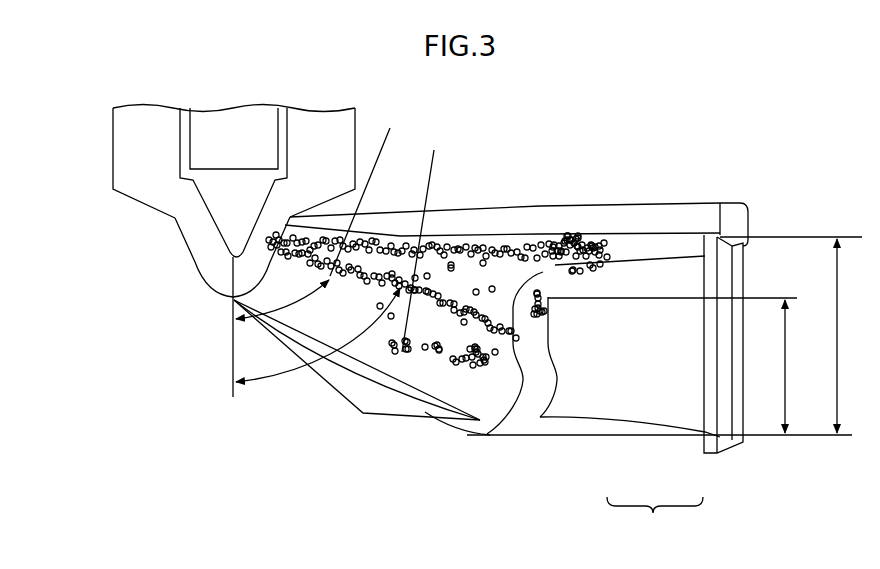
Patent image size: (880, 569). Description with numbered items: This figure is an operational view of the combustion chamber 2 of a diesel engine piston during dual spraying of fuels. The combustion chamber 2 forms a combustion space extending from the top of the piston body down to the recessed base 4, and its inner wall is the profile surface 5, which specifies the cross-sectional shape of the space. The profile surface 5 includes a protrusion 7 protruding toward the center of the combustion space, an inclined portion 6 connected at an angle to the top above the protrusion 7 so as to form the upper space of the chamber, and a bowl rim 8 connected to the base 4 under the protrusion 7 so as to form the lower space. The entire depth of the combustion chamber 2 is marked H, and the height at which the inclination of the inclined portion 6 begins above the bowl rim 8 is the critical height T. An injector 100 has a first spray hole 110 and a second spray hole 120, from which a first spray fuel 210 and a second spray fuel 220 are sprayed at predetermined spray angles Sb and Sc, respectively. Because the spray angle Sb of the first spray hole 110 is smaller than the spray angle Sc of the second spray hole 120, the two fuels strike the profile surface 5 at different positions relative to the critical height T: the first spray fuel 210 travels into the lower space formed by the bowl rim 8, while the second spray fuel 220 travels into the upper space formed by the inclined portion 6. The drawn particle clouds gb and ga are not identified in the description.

The injector 100 is at (128, 162).
The first spray hole 110 is at (253, 235).
The second spray hole 120 is at (283, 233).
The first spray fuel 210 is at (371, 190).
The second spray fuel 220 is at (433, 238).
The upper particle stream gb is at (485, 225).
The lower particle stream ga is at (427, 310).
The combustion chamber 2 is at (438, 395).
The base 4 is at (480, 436).
The profile surface 5 is at (655, 518).
The inclined portion 6 is at (582, 272).
The protrusion 7 is at (543, 320).
The bowl rim 8 is at (548, 390).
The entire depth of combustion chamber H is at (664, 336).
The critical height T is at (672, 365).
The spray angle of first spray hole Sb is at (282, 298).
The spray angle of second spray hole Sc is at (318, 335).